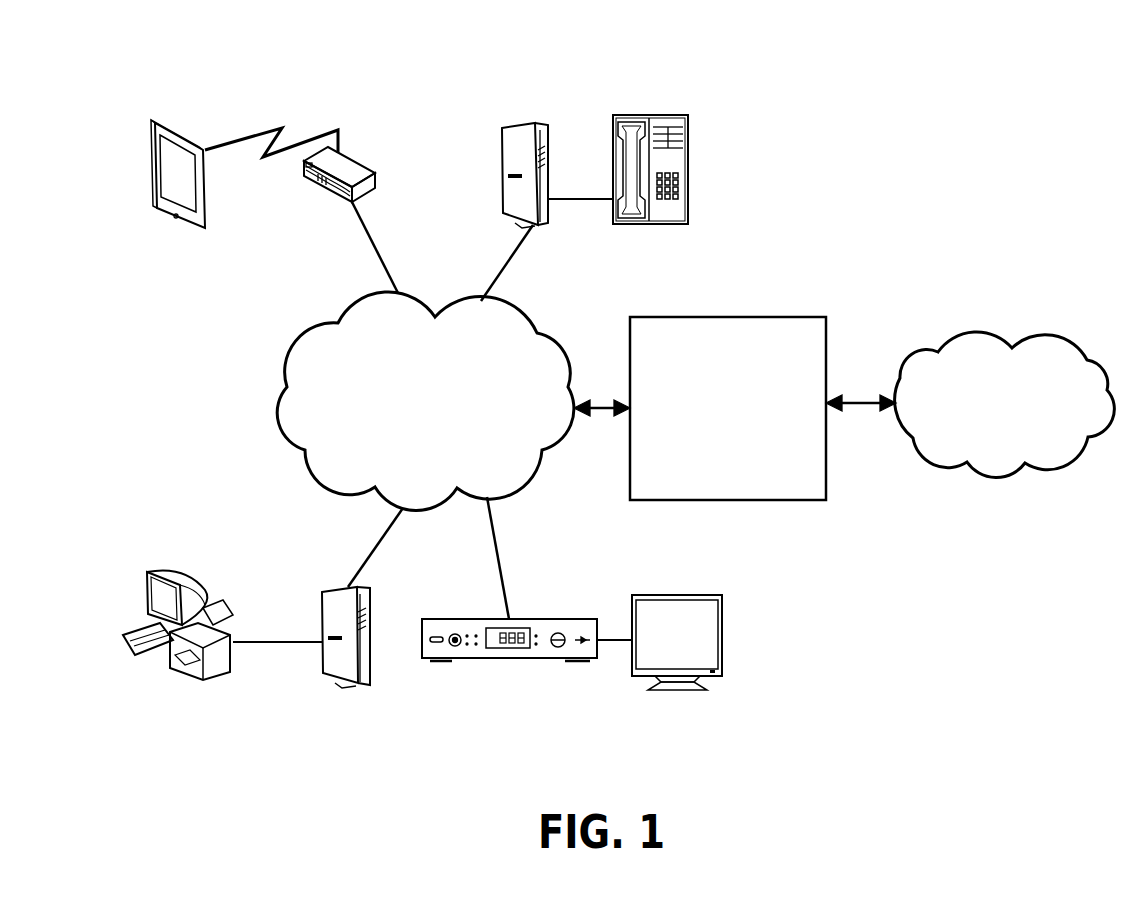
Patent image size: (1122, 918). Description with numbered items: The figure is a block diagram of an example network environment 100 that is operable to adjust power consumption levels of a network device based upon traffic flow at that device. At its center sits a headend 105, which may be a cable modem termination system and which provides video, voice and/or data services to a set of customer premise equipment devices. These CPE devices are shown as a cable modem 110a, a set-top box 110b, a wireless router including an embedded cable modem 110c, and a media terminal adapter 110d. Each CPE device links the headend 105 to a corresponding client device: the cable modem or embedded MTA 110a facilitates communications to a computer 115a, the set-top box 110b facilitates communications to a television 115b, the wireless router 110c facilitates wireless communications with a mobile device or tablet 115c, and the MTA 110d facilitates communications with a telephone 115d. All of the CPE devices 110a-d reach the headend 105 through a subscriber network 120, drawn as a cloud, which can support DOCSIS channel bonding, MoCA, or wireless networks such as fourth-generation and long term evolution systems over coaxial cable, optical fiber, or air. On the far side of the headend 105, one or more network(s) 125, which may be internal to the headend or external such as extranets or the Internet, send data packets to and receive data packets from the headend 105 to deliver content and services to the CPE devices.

The network environment 100 is at (1040, 703).
The headend 105 is at (777, 315).
The cable modem 110a is at (350, 688).
The set-top box 110b is at (505, 662).
The wireless router including an embedded cable modem 110c is at (368, 170).
The media terminal adapter 110d is at (532, 121).
The computer 115a is at (158, 570).
The television 115b is at (685, 595).
The mobile device or tablet 115c is at (163, 121).
The telephone 115d is at (677, 113).
The subscriber network 120 is at (358, 493).
The network(s) 125 is at (993, 480).